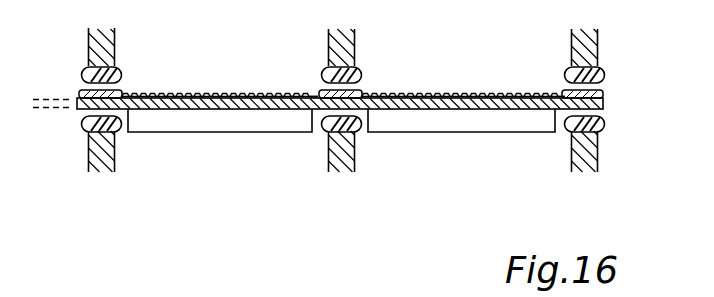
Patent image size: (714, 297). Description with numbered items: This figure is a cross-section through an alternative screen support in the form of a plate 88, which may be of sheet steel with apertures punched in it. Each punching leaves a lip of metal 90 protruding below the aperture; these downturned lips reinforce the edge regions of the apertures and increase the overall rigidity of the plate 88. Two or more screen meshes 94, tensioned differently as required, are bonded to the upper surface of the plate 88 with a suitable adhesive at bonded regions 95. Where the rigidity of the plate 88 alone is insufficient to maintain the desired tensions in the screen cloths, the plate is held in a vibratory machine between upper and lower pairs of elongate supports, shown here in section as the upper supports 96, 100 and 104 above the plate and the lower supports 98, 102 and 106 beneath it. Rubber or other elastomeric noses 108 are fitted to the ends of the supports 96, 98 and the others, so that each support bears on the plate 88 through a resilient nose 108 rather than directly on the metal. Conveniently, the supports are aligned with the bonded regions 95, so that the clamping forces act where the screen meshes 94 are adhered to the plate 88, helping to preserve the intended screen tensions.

The plate 88 is at (603, 107).
The lip of metal 90 is at (465, 125).
The screen mesh 94 is at (462, 97).
The bonded region 95 is at (118, 92).
The elongate support 96 is at (113, 46).
The elongate support 98 is at (113, 162).
The elongate support 100 is at (349, 42).
The elongate support 102 is at (348, 164).
The elongate support 104 is at (595, 45).
The lower post 106 is at (597, 164).
The elastomeric nose 108 is at (88, 70).